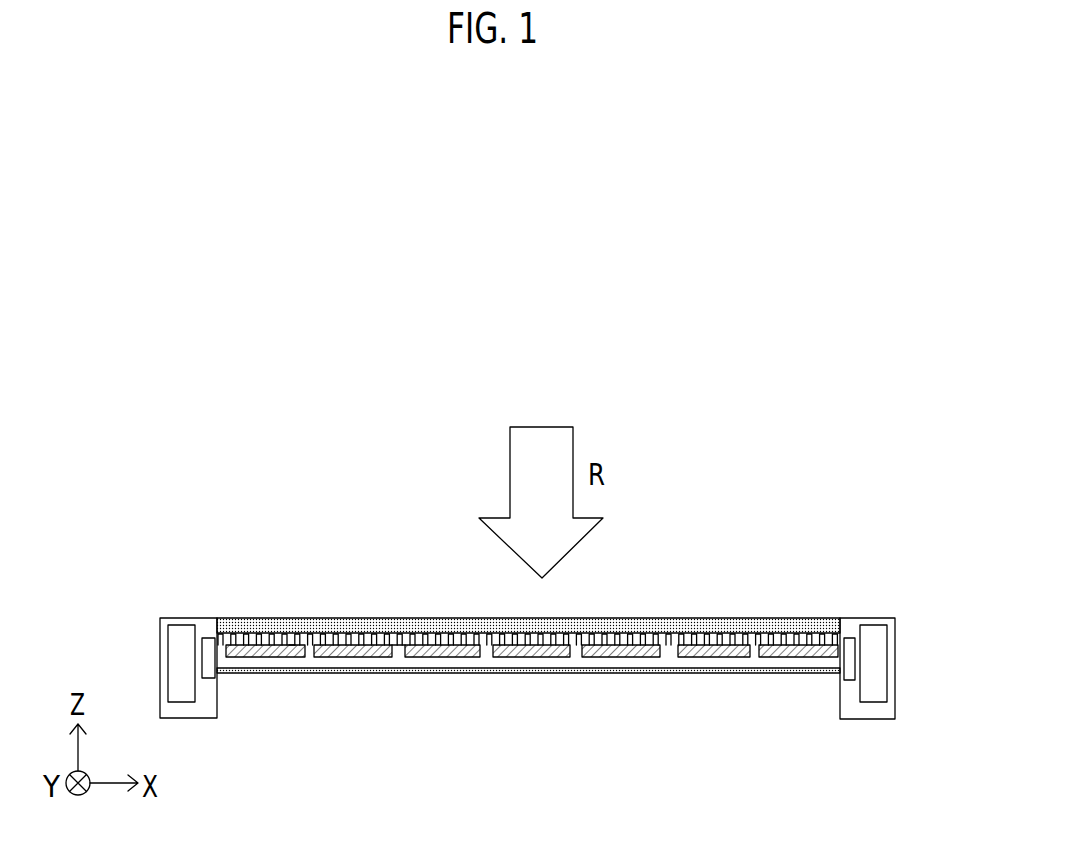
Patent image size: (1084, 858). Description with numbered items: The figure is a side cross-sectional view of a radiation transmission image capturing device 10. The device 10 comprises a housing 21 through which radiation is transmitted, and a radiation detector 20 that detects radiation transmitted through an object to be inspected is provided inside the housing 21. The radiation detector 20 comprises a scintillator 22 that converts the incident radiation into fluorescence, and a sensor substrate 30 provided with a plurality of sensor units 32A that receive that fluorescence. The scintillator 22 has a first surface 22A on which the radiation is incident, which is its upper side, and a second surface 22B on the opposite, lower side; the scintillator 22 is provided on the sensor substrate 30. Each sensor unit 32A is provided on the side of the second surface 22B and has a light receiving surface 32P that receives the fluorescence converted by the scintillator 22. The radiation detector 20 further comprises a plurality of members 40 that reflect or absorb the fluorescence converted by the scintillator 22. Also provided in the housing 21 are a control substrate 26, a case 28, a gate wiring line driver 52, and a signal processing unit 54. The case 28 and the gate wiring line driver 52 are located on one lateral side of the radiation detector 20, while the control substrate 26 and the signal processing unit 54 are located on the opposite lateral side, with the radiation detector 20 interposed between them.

The radiation transmission image capturing device 10 is at (751, 543).
The radiation detector 20 is at (775, 716).
The housing 21 is at (847, 698).
The scintillator 22 is at (672, 630).
The first surface 22A is at (402, 609).
The second surface 22B is at (398, 650).
The control substrate 26 is at (891, 662).
The case 28 is at (162, 657).
The sensor substrate 30 is at (747, 660).
The sensor unit 32A is at (808, 657).
The light receiving surface 32P is at (507, 642).
The member 40 is at (295, 636).
The gate wiring line driver 52 is at (201, 640).
The signal processing unit 54 is at (851, 638).